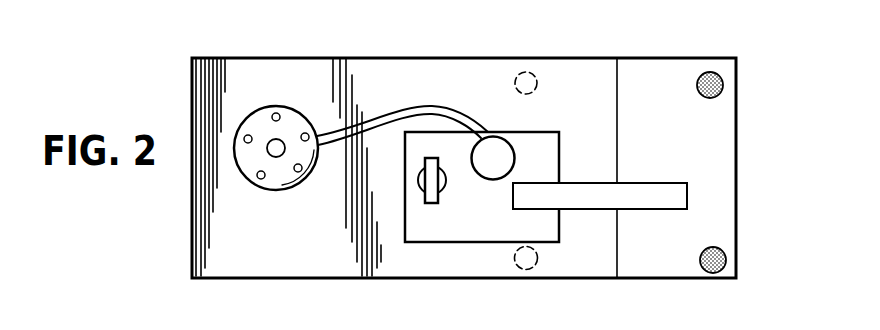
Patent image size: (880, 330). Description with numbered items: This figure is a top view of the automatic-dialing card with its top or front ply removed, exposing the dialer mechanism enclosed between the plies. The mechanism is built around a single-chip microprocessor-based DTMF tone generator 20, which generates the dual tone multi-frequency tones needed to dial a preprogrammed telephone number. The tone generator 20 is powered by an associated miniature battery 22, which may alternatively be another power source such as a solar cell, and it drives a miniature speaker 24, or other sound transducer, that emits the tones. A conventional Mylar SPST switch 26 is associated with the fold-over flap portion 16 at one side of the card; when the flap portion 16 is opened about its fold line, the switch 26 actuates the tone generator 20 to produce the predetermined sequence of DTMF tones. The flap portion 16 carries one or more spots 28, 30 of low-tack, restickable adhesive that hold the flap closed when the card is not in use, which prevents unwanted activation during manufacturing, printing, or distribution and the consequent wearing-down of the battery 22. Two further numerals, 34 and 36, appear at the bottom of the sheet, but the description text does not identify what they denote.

The fold-over flap portion 16 is at (633, 68).
The DTMF tone generator 20 is at (497, 146).
The miniature battery 22 is at (446, 186).
The miniature speaker 24 is at (280, 189).
The Mylar SPST switch 26 is at (580, 204).
The spot of low-tack restickable adhesive 28 is at (702, 75).
The spot of low-tack restickable adhesive 30 is at (707, 281).
The base 34 is at (40, 329).
The support 36 is at (242, 321).